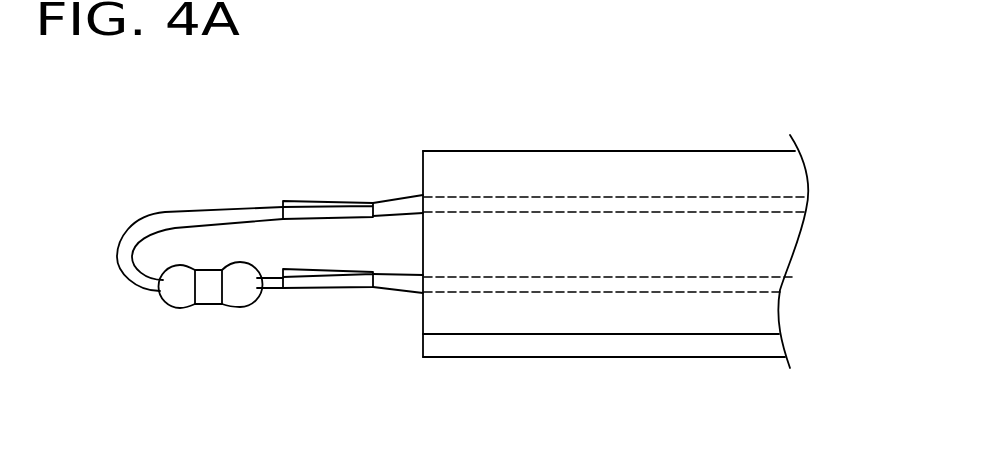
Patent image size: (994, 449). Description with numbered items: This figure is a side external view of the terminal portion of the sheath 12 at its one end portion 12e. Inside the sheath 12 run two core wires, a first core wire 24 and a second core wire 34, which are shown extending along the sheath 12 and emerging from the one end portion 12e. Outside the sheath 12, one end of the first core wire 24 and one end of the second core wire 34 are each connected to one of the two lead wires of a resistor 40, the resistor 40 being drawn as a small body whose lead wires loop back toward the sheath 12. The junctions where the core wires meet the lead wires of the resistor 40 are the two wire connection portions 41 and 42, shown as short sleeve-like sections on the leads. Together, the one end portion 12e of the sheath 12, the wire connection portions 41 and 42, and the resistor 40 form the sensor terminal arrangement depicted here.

The sheath 12 is at (525, 165).
The one end portion of the sheath 12e is at (420, 170).
The first core wire 24 is at (532, 291).
The second core wire 34 is at (628, 212).
The resistor 40 is at (232, 297).
The wire connection portion 41 is at (330, 288).
The wire connection portion 42 is at (328, 200).